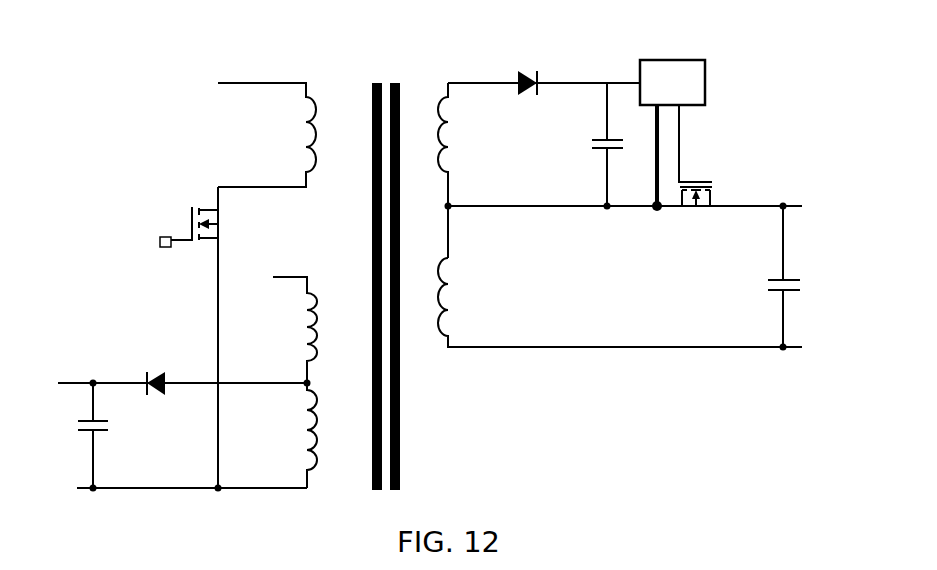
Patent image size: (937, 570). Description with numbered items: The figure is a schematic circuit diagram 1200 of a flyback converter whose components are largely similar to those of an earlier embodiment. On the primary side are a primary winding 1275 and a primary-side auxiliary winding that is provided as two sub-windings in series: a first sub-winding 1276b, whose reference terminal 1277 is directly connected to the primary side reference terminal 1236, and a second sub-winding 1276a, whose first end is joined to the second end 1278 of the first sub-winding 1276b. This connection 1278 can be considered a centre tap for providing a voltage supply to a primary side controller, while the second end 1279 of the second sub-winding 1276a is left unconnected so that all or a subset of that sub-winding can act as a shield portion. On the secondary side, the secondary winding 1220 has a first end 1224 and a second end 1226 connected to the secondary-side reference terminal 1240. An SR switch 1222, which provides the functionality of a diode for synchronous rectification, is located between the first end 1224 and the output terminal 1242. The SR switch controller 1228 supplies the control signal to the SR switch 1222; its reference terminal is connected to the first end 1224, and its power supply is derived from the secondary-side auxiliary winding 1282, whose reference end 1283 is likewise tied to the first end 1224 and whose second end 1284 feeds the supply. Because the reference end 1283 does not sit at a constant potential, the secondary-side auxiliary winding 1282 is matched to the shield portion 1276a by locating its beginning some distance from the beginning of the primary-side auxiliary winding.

The schematic circuit diagram 1200 is at (333, 64).
The primary winding Lp 1275 is at (308, 137).
The second end of the second sub-winding 1279 is at (290, 278).
The centre tap 1278 is at (303, 386).
The reference terminal of the first sub-winding 1277 is at (306, 491).
The primary side reference terminal 1236 is at (78, 490).
The second sub-winding 1276a is at (313, 357).
The first sub-winding 1276b is at (313, 443).
The second end of the secondary-side auxiliary winding 1284 is at (451, 93).
The secondary-side auxiliary winding 1282 is at (449, 133).
The reference end of the secondary-side auxiliary winding 1283 is at (449, 173).
The first end of the secondary winding 1224 is at (449, 227).
The secondary winding 1220 is at (449, 298).
The lower terminal of secondary winding 1226 is at (449, 349).
The SR switch controller 1228 is at (695, 82).
The synchronous rectifier switch 1222 is at (712, 195).
The output terminal 1242 is at (785, 203).
The output ground terminal 1240 is at (801, 349).